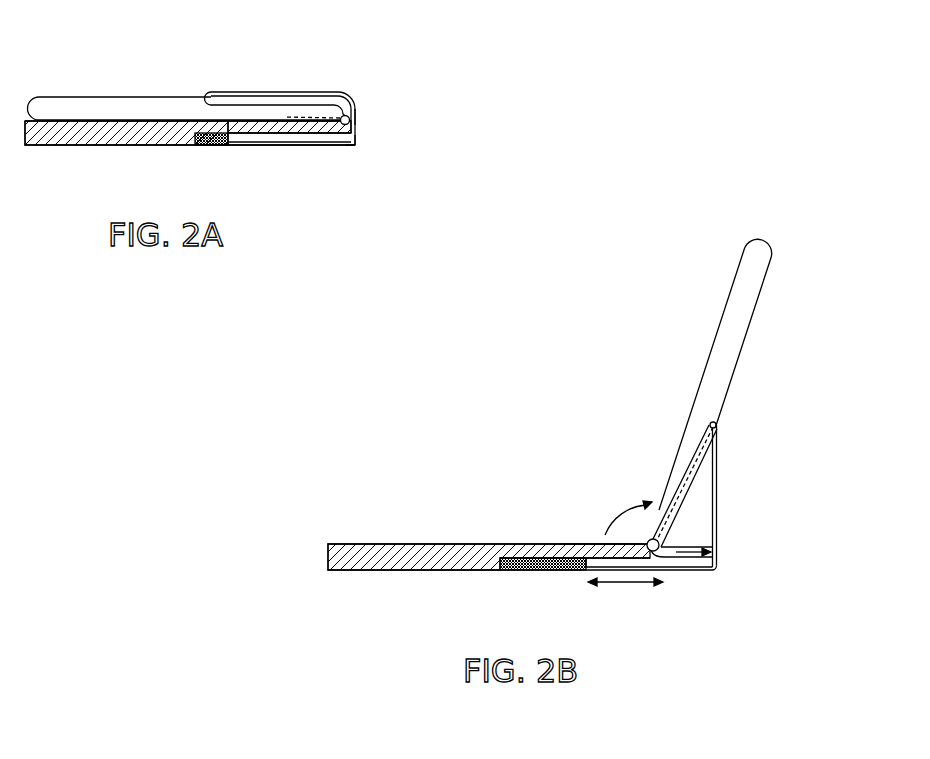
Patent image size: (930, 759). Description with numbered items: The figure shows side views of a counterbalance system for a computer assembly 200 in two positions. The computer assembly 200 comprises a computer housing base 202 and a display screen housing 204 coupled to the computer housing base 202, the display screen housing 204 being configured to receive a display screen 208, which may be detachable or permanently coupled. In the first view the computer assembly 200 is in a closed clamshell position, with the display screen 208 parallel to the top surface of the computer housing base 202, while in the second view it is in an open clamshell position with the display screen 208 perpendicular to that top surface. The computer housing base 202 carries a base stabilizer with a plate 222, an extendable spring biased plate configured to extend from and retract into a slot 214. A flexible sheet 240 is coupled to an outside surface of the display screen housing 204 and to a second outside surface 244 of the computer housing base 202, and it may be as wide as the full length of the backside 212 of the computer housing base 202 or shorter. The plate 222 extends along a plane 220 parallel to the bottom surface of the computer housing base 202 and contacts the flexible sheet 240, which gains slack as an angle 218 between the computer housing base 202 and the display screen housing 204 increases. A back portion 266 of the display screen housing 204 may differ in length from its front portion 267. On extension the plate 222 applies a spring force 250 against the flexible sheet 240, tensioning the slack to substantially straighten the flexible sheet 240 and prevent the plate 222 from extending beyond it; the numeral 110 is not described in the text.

In FIG. 2A, the base plate 110 is at (303, 143).
In FIG. 2A, the computer assembly 200 is at (233, 80).
In FIG. 2A, the computer housing base 202 is at (67, 132).
In FIG. 2B, the computer housing base 202 is at (370, 571).
In FIG. 2A, the display screen housing 204 is at (327, 92).
In FIG. 2A, the display screen 208 is at (57, 107).
In FIG. 2A, the backside 212 is at (380, 111).
In FIG. 2A, the slot 214 is at (207, 146).
In FIG. 2B, the slot 214 is at (540, 570).
In FIG. 2B, the angle 218 is at (602, 541).
In FIG. 2B, the plane 220 is at (622, 587).
In FIG. 2B, the plate 222 is at (677, 564).
In FIG. 2A, the flexible sheet 240 is at (352, 100).
In FIG. 2B, the flexible sheet 240 is at (719, 467).
In FIG. 2A, the second outside surface 244 is at (358, 138).
In FIG. 2B, the spring force 250 is at (690, 557).
In FIG. 2B, the back portion 266 is at (716, 428).
In FIG. 2B, the front portion 267 is at (660, 505).